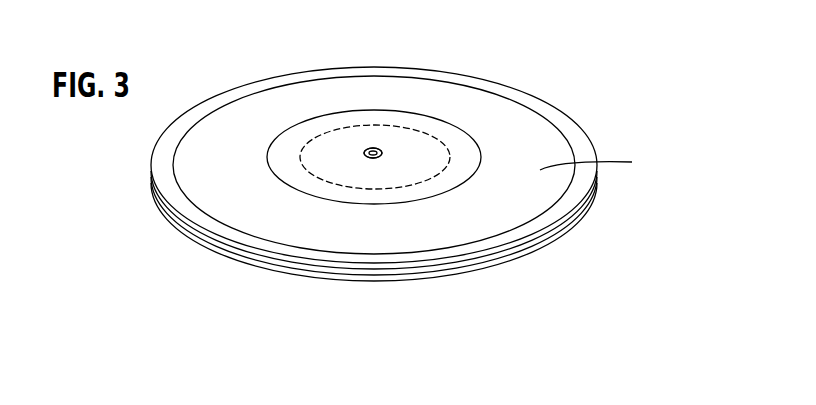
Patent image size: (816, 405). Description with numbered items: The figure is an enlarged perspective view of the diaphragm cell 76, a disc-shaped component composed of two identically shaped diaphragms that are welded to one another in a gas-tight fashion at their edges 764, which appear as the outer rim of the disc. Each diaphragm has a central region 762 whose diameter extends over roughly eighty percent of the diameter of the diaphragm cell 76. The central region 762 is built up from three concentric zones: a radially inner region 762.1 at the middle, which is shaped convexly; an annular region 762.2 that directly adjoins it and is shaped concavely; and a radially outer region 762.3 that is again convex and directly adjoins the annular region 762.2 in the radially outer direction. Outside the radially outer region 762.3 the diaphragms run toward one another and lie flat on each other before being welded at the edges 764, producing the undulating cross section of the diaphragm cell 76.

The diaphragm cell 76 is at (562, 67).
The edges 764 is at (483, 78).
The central region 762 is at (373, 138).
The radially inner region 762.1 is at (373, 153).
The annular region 762.2 is at (458, 146).
The radially outer region 762.3 is at (613, 159).